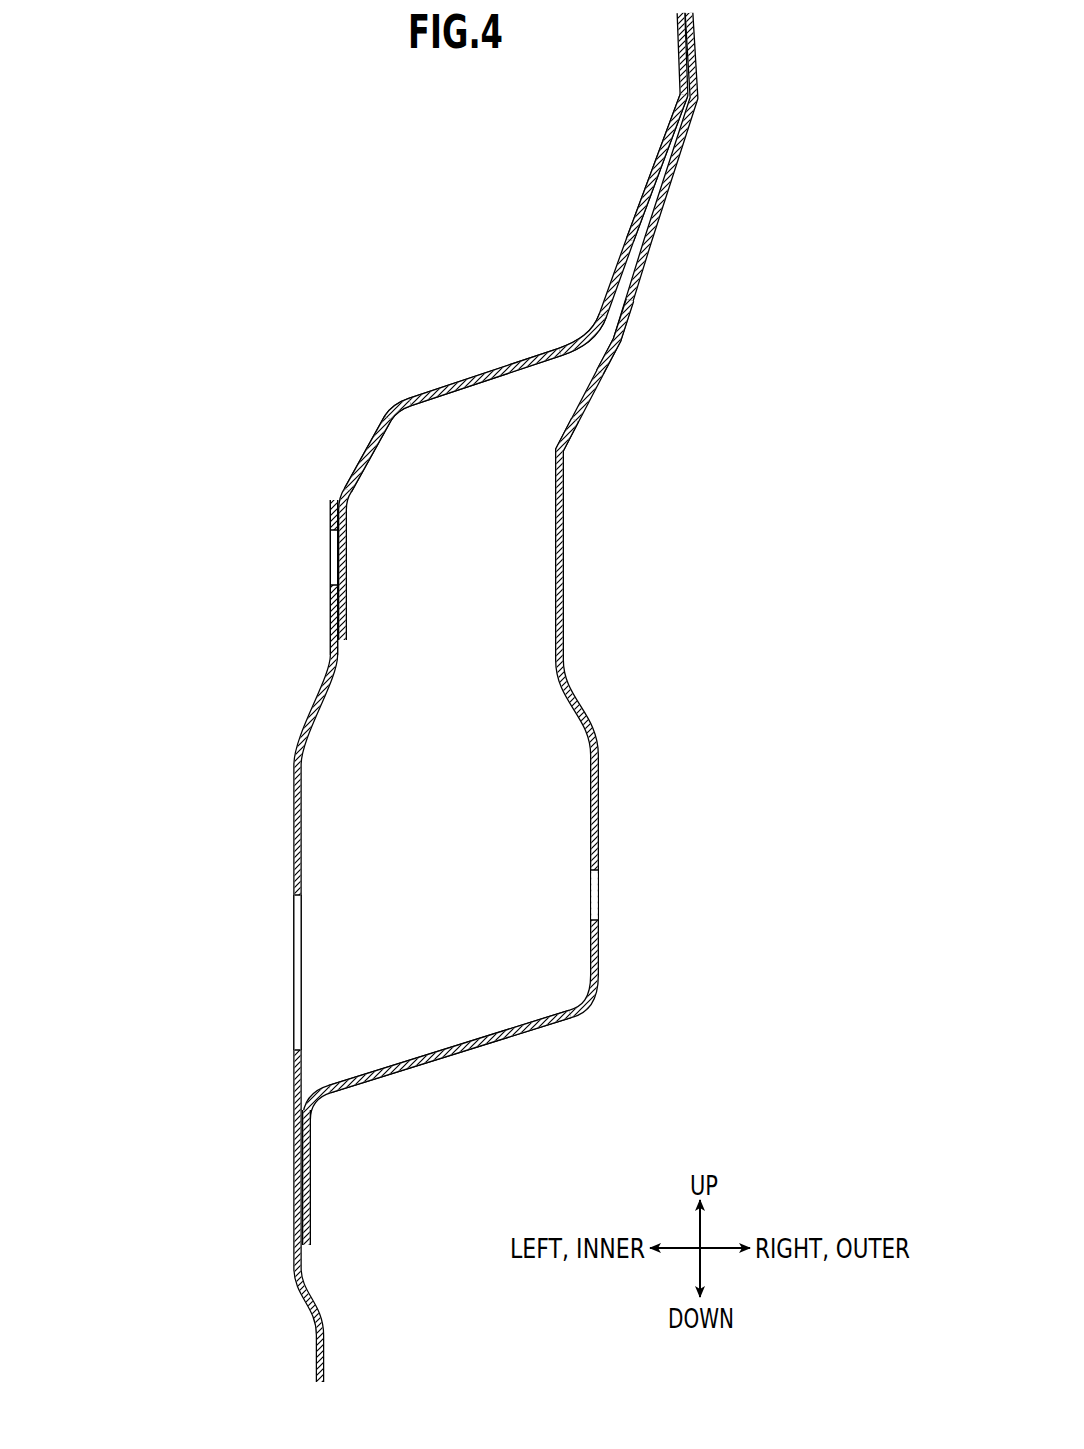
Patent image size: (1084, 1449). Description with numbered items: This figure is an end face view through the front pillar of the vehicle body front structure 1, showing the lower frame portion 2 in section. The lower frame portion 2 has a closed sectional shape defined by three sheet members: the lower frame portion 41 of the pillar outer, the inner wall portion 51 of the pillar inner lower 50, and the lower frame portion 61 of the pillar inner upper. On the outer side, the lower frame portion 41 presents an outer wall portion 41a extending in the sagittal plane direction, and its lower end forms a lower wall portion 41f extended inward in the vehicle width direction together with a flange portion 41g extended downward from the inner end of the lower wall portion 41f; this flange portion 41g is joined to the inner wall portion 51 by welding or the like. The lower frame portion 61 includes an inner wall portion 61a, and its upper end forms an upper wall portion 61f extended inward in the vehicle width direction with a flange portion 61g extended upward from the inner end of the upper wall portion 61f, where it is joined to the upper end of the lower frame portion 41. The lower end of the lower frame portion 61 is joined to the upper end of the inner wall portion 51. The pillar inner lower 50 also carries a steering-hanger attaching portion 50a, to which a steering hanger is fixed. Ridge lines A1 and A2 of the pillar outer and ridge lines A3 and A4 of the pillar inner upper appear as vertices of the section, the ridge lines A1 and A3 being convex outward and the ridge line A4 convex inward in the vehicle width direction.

The vehicle body front structure 1 is at (203, 181).
The lower frame portion 2 is at (630, 851).
The lower frame portion 41 is at (718, 355).
The outer wall portion 41a is at (565, 567).
The lower wall portion 41f is at (463, 1050).
The flange portion 41g is at (313, 1183).
The pillar inner lower 50 is at (243, 793).
The steering-hanger attaching portion 50a is at (288, 985).
The inner wall portion 51 is at (328, 514).
The lower frame portion 61 is at (303, 360).
The inner wall portion 61a is at (365, 452).
The upper wall portion 61f is at (480, 373).
The flange portion 61g is at (635, 213).
The ridge line A1 is at (570, 450).
The ridge line A2 is at (618, 354).
The ridge line A3 is at (390, 412).
The ridge line A4 is at (591, 330).